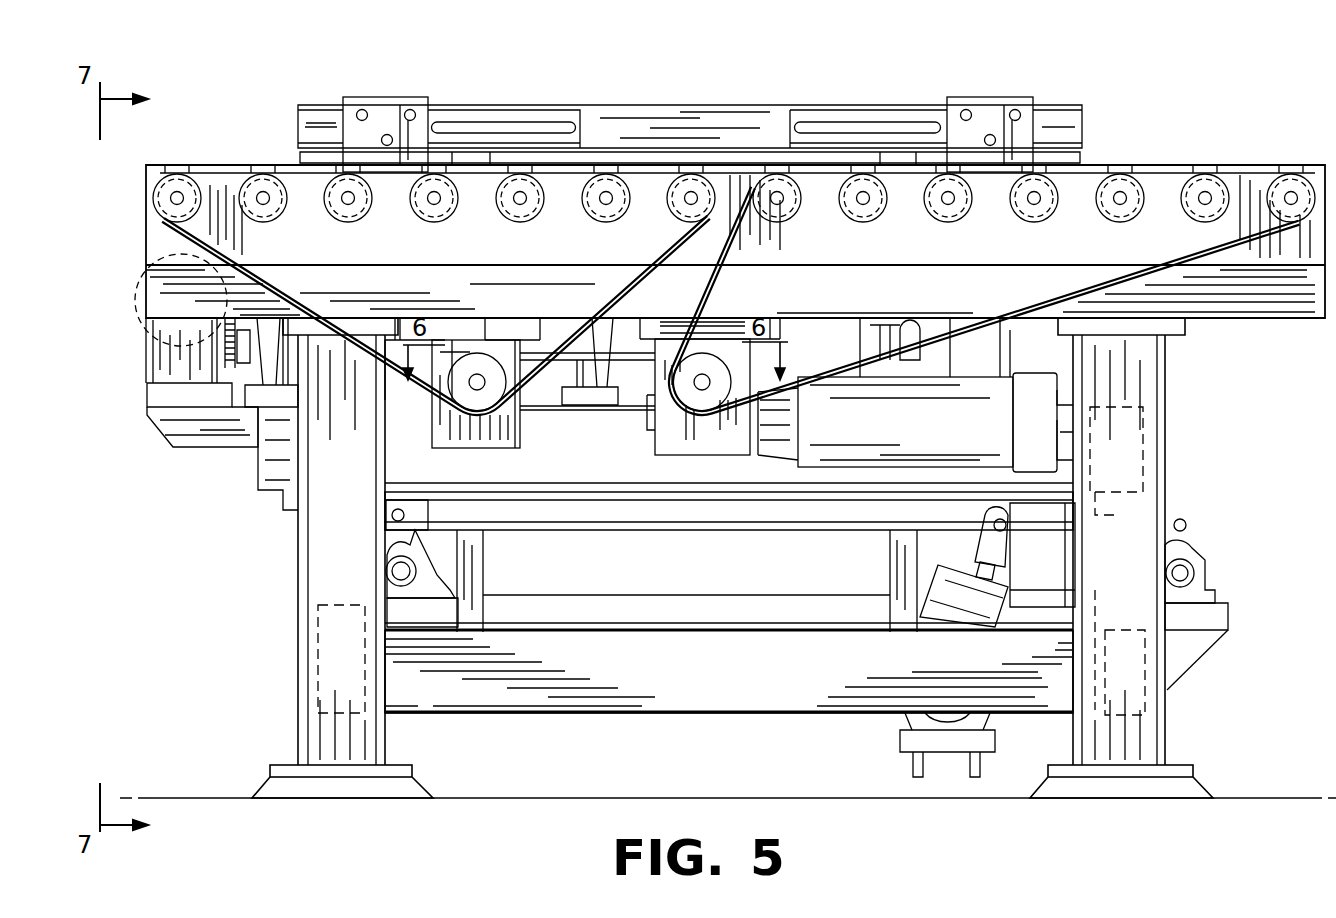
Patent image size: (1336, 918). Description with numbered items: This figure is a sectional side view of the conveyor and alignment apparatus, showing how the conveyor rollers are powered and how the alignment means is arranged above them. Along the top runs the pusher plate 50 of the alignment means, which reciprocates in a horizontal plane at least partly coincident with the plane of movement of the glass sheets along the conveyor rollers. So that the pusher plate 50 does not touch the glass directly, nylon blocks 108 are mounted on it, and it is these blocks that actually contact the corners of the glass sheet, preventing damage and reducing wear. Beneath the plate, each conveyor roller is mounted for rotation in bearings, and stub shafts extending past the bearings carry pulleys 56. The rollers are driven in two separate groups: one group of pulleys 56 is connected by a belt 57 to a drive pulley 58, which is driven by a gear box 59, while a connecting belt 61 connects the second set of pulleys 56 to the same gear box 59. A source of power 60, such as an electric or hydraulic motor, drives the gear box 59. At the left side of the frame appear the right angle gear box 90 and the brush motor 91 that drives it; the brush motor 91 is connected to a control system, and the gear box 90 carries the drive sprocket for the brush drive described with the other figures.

The pusher plate 50 is at (713, 108).
The pulleys 56 is at (183, 186).
The belt 57 is at (315, 300).
The drive pulley 58 is at (480, 365).
The gear box 59 is at (681, 450).
The source of power 60 is at (935, 431).
The connecting belt 61 is at (628, 412).
The right angle gear box 90 is at (172, 378).
The brush motor 91 is at (135, 300).
The nylon blocks 108 is at (393, 112).